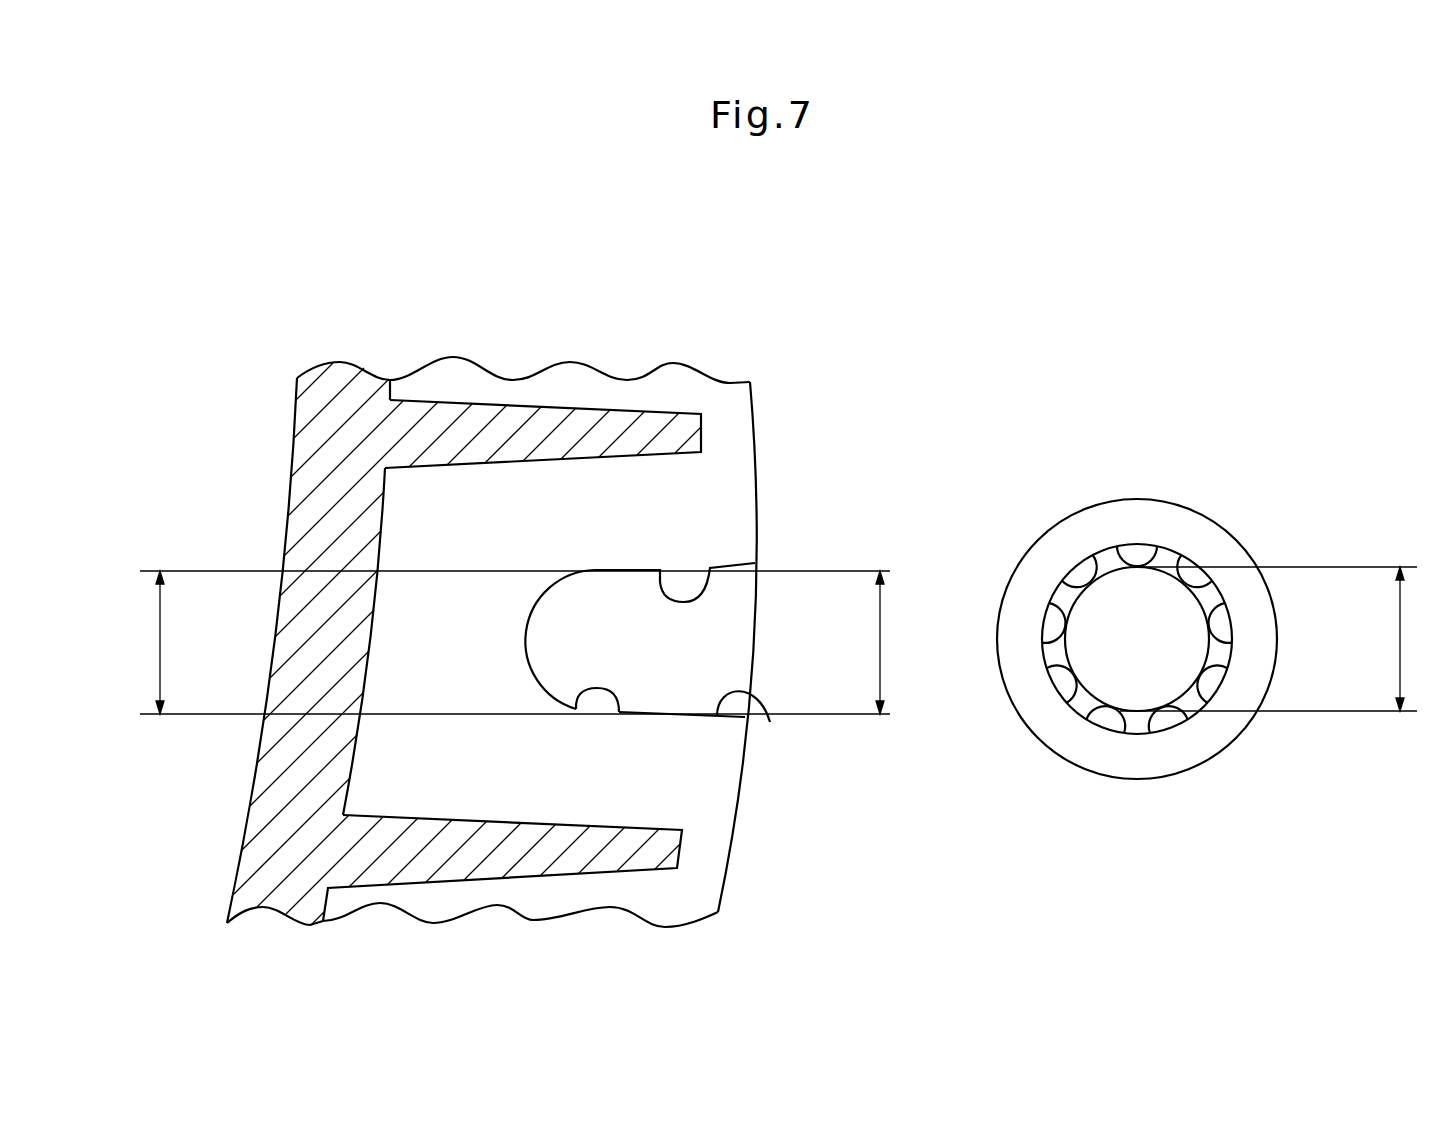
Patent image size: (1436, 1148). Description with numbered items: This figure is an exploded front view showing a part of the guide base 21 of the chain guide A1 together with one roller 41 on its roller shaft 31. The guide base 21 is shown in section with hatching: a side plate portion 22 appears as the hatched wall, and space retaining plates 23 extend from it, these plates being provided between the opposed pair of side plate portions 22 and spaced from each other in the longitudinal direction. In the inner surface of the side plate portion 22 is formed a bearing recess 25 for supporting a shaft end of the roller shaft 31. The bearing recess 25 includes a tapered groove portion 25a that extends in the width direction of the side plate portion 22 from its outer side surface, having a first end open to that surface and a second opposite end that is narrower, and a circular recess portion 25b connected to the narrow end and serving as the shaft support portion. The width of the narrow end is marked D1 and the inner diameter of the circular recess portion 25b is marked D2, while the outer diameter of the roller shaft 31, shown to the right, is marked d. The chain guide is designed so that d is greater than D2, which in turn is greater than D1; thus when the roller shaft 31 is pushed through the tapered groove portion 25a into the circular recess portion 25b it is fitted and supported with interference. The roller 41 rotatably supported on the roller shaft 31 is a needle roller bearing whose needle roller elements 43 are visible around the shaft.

The guide base 21 is at (300, 473).
The side plate portion 22 is at (676, 390).
The space retaining plate 23 is at (517, 423).
The bearing recess 25 is at (712, 580).
The tapered groove portion 25a is at (770, 722).
The circular recess portion 25b is at (617, 708).
The roller shaft 31 is at (1127, 607).
The chain guiding roller 41 is at (1208, 515).
The needle roller element 43 is at (1166, 717).
The chain guide A1 is at (295, 398).
The width of the second narrow end of the tapered groove portion D1 is at (515, 642).
The inner diameter of the circular recess portion D2 is at (146, 642).
The outer diameter of the roller shaft d is at (1268, 639).